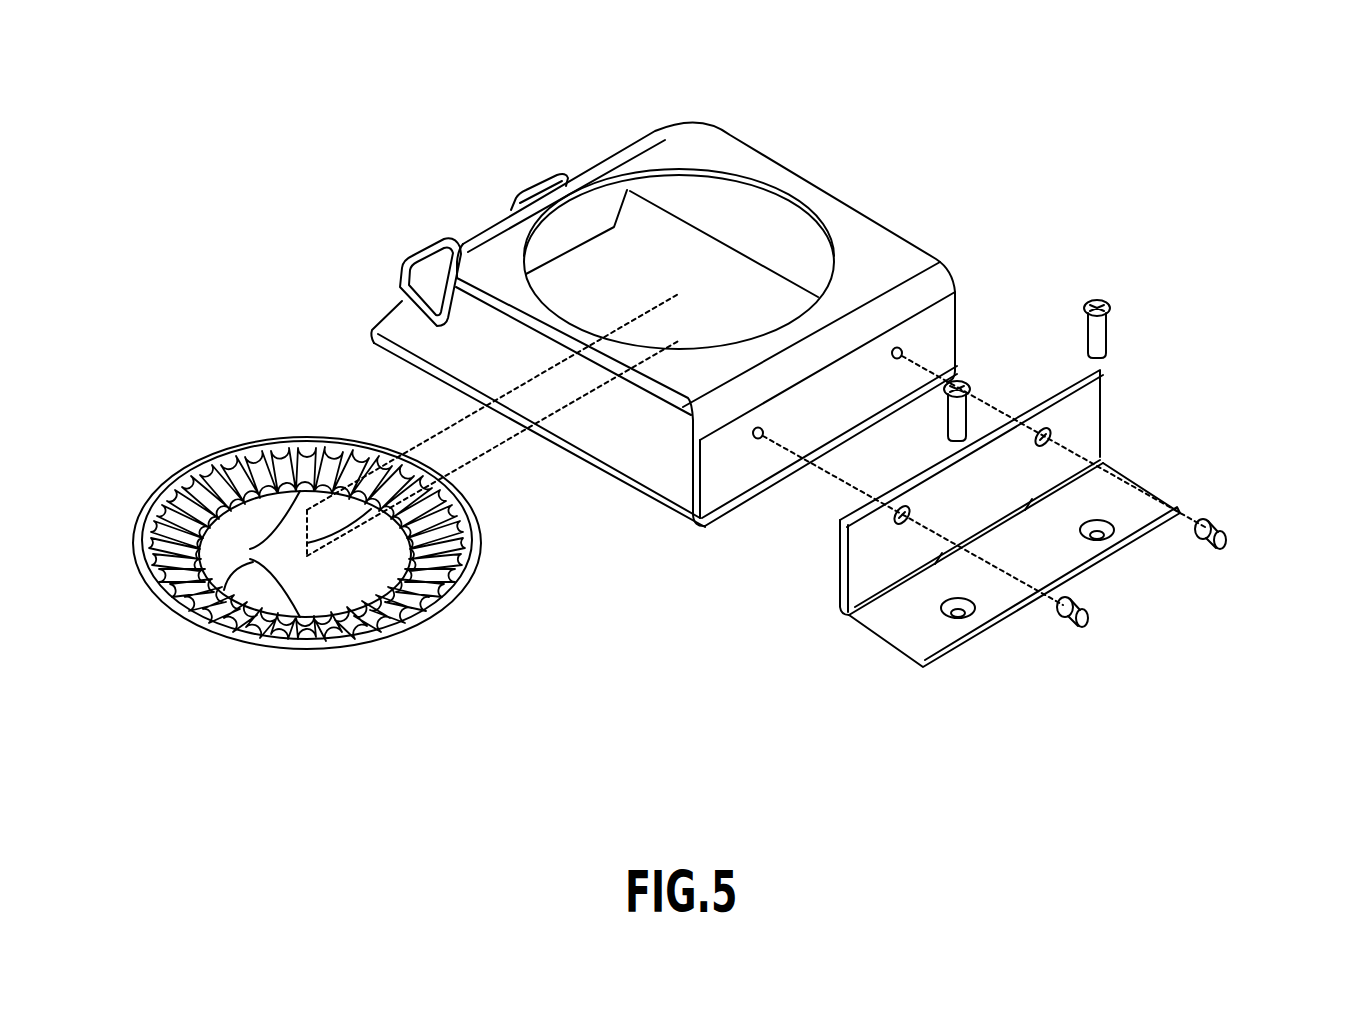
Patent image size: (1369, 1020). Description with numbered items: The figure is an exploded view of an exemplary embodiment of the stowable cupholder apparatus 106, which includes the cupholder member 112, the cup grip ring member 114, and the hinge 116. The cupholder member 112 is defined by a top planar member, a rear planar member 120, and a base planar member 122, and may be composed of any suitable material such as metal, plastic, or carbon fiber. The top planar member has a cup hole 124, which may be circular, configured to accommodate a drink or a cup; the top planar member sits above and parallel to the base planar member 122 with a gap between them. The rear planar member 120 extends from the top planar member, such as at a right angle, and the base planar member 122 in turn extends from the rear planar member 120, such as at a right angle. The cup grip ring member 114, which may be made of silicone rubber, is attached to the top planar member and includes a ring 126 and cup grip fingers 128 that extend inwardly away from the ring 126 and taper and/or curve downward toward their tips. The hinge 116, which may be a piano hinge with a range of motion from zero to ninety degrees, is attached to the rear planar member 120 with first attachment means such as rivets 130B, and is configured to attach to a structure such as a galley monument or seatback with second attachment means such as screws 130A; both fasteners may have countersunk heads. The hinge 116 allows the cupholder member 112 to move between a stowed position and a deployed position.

The stowable cupholder apparatus 106 is at (431, 118).
The cupholder member 112 is at (775, 180).
The cup grip ring member 114 is at (165, 487).
The hinge 116 is at (1098, 425).
The rear planar member 120 is at (948, 342).
The base planar member 122 is at (610, 463).
The cup hole 124 is at (706, 172).
The ring 126 is at (200, 626).
The cup grip fingers 128 is at (312, 549).
The screws 130A is at (962, 383).
The rivets 130B is at (1228, 530).